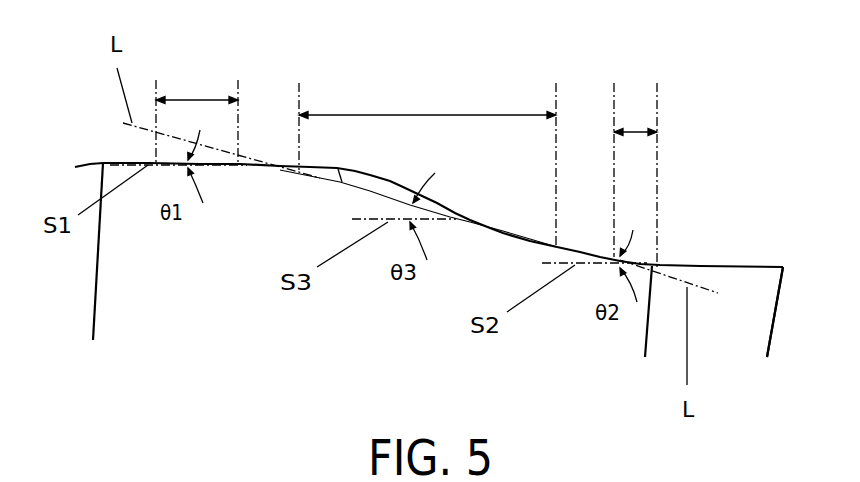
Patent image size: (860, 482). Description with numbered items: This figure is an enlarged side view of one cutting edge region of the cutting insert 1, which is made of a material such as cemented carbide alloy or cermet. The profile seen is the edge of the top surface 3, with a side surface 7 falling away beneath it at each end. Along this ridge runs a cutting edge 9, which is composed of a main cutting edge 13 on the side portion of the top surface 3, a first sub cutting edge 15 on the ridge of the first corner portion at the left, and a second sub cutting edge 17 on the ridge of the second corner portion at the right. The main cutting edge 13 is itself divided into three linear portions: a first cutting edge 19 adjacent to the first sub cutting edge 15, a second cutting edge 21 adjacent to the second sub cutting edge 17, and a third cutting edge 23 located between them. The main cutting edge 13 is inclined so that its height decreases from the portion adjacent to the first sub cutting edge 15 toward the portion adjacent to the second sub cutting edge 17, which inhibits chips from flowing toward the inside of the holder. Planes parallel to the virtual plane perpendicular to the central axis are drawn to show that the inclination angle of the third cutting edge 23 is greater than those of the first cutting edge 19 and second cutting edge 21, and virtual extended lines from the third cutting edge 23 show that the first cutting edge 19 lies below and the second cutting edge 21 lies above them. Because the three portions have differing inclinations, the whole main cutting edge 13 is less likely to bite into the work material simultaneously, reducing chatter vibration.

The cutting insert 1 is at (703, 123).
The top surface 3 is at (447, 207).
The side surface 7 is at (717, 325).
The cutting edge 9 is at (417, 168).
The main cutting edge 13 is at (417, 144).
The first sub cutting edge 15 is at (110, 162).
The second sub cutting edge 17 is at (722, 265).
The first cutting edge 19 is at (200, 98).
The second cutting edge 21 is at (635, 128).
The third cutting edge 23 is at (427, 162).